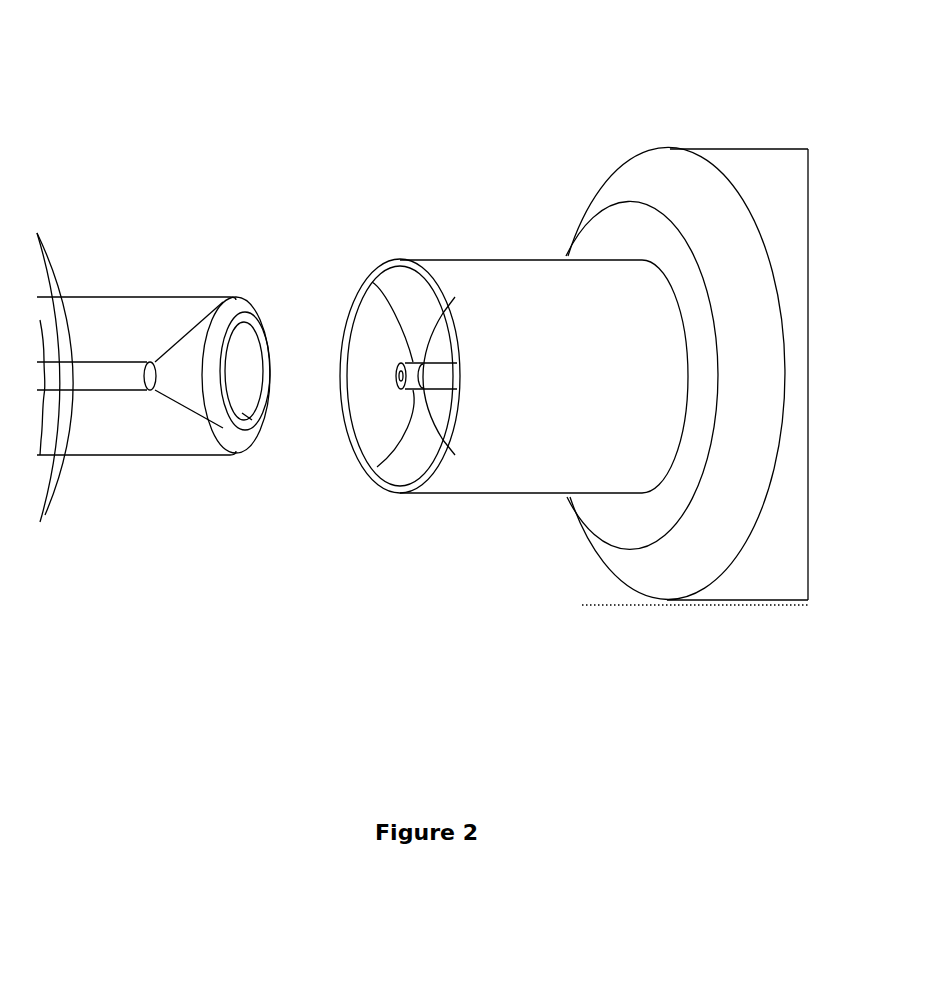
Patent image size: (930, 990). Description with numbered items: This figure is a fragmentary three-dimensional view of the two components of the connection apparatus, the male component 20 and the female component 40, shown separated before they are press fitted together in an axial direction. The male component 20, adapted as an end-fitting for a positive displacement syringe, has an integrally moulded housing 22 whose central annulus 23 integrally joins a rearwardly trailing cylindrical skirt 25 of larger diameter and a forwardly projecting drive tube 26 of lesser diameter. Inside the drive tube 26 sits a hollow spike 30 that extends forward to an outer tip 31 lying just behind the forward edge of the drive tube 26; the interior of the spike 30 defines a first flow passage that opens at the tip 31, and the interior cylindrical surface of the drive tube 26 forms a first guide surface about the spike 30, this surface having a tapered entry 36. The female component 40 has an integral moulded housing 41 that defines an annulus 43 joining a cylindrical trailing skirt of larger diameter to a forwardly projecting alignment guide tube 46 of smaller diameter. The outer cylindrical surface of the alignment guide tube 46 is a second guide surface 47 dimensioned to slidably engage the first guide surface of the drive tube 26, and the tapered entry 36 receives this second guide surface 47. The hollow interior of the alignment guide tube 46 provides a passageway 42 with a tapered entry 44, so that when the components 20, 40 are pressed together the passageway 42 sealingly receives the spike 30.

The male component 20 is at (607, 127).
The housing 22 is at (778, 612).
The central annulus 23 is at (663, 560).
The cylindrical skirt 25 is at (778, 148).
The drive tube 26 is at (492, 270).
The hollow spike 30 is at (378, 463).
The outer tip 31 is at (372, 282).
The tapered entry 36 is at (410, 460).
The female component 40 is at (170, 188).
The housing 41 is at (66, 261).
The passageway 42 is at (118, 377).
The annulus 43 is at (50, 503).
The tapered entry 44 is at (262, 430).
The alignment guide tube 46 is at (134, 465).
The second guide surface 47 is at (186, 296).